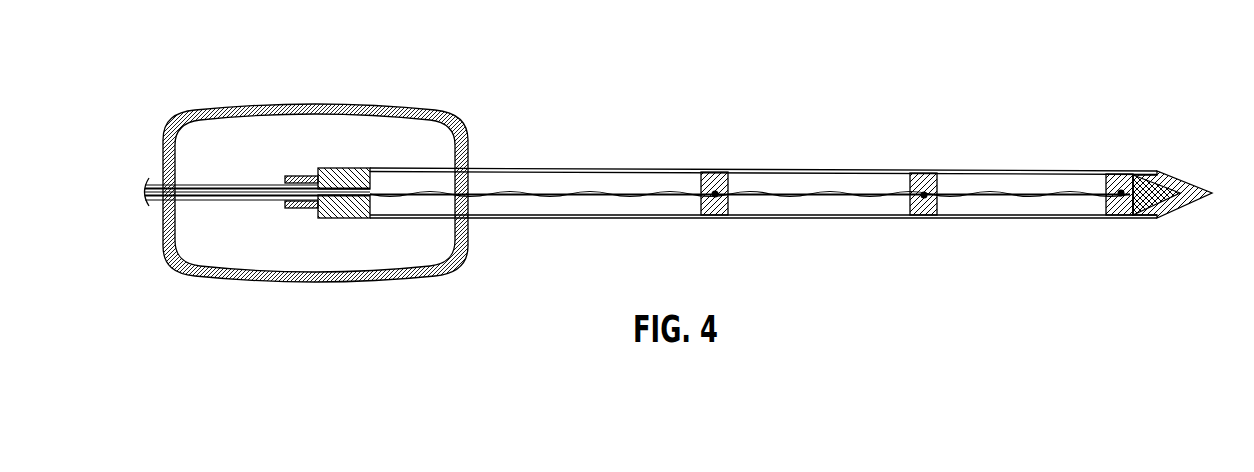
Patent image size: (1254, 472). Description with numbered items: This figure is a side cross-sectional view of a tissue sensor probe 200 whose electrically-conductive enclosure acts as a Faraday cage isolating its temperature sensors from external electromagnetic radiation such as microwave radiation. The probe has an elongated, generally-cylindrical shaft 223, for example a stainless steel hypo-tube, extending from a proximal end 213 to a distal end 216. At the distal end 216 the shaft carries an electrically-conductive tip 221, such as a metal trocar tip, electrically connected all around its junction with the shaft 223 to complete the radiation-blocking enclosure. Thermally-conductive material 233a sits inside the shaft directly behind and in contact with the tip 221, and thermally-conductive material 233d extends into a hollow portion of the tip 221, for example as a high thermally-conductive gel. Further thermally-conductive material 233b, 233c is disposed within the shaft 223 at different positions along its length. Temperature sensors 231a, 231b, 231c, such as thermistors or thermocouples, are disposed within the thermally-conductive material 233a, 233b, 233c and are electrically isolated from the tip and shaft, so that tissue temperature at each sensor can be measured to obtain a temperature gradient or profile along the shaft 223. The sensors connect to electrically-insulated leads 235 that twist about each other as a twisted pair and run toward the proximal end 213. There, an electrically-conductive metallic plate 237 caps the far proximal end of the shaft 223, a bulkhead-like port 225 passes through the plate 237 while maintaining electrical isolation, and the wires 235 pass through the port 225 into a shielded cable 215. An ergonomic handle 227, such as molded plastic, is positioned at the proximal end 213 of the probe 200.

The tissue sensor probe 200 is at (792, 60).
The proximal end 213 is at (266, 72).
The shielded cable 215 is at (206, 207).
The distal end 216 is at (1110, 125).
The electrically-conductive tip 221 is at (1132, 133).
The elongated shaft 223 is at (1017, 216).
The bulkhead-like port 225 is at (289, 215).
The ergonomic handle 227 is at (238, 103).
The temperature sensor 231a is at (1121, 193).
The temperature sensor 231b is at (924, 195).
The temperature sensor 231c is at (715, 194).
The thermally-conductive material 233a is at (1118, 172).
The thermally-conductive material 233b is at (924, 173).
The thermally-conductive material 233c is at (710, 175).
The thermally-conductive material 233d is at (1167, 180).
The electrically-insulated leads 235 is at (567, 192).
The electrically-conductive metallic plate 237 is at (343, 160).